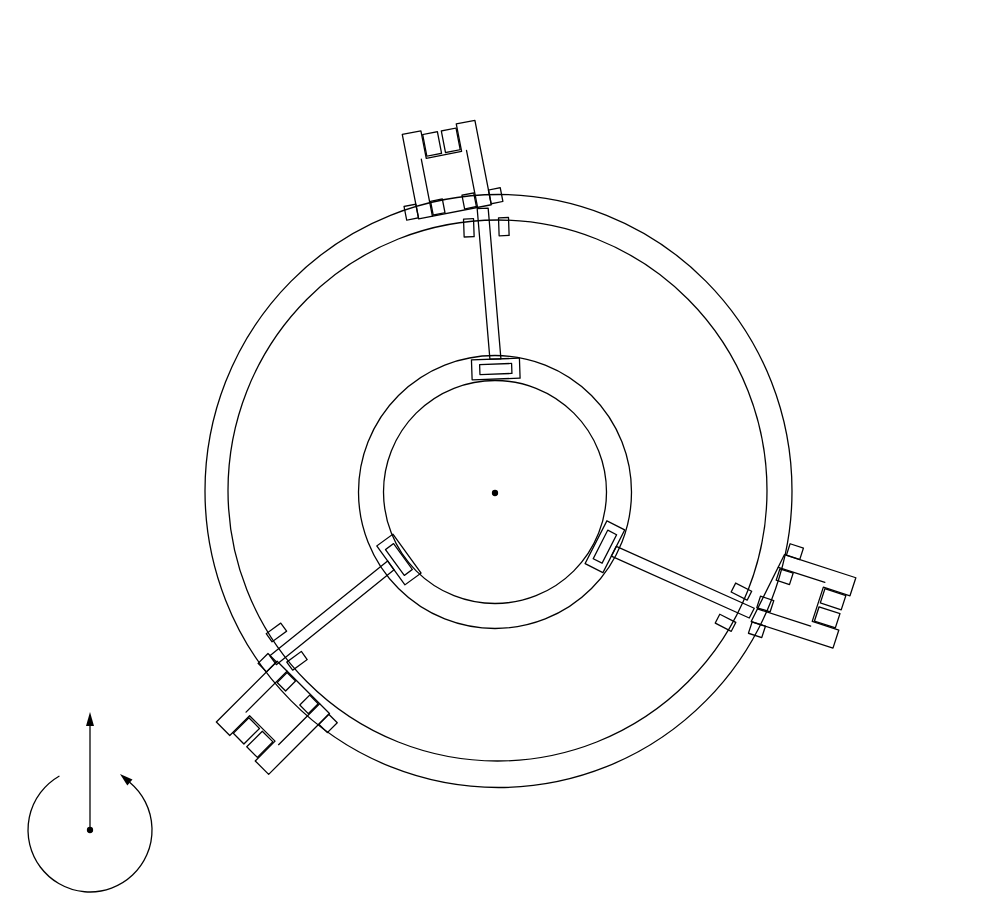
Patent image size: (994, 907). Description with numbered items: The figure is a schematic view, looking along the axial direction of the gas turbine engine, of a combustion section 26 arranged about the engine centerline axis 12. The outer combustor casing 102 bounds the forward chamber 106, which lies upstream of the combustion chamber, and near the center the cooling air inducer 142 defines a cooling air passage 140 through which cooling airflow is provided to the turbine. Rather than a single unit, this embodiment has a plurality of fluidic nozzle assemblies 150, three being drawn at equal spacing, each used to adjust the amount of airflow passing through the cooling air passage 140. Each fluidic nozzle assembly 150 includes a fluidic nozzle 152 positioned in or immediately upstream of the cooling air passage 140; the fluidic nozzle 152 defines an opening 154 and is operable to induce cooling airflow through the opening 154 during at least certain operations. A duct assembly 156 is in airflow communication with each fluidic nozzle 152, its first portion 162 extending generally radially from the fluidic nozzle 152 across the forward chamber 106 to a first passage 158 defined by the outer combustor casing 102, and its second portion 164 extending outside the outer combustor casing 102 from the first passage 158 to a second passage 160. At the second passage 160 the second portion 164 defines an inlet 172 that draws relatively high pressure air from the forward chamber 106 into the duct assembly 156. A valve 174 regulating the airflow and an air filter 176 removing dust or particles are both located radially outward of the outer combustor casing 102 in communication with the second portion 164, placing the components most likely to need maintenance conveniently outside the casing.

The longitudinal centerline axis 12 is at (499, 493).
The combustion section 26 is at (705, 152).
The outer combustor casing 102 is at (612, 214).
The forward chamber 106 is at (347, 412).
The cooling air passage 140 is at (611, 438).
The cooling air inducer 142 is at (595, 388).
The fluidic nozzle assembly 150 is at (506, 137).
The fluidic nozzle 152 is at (519, 360).
The opening 154 is at (493, 390).
The duct assembly 156 is at (512, 429).
The first passage 158 is at (494, 206).
The second passage 160 is at (453, 204).
The first portion 162 is at (484, 299).
The second portion 164 is at (534, 408).
The inlet 172 is at (454, 204).
The valve 174 is at (442, 142).
The air filter 176 is at (446, 169).